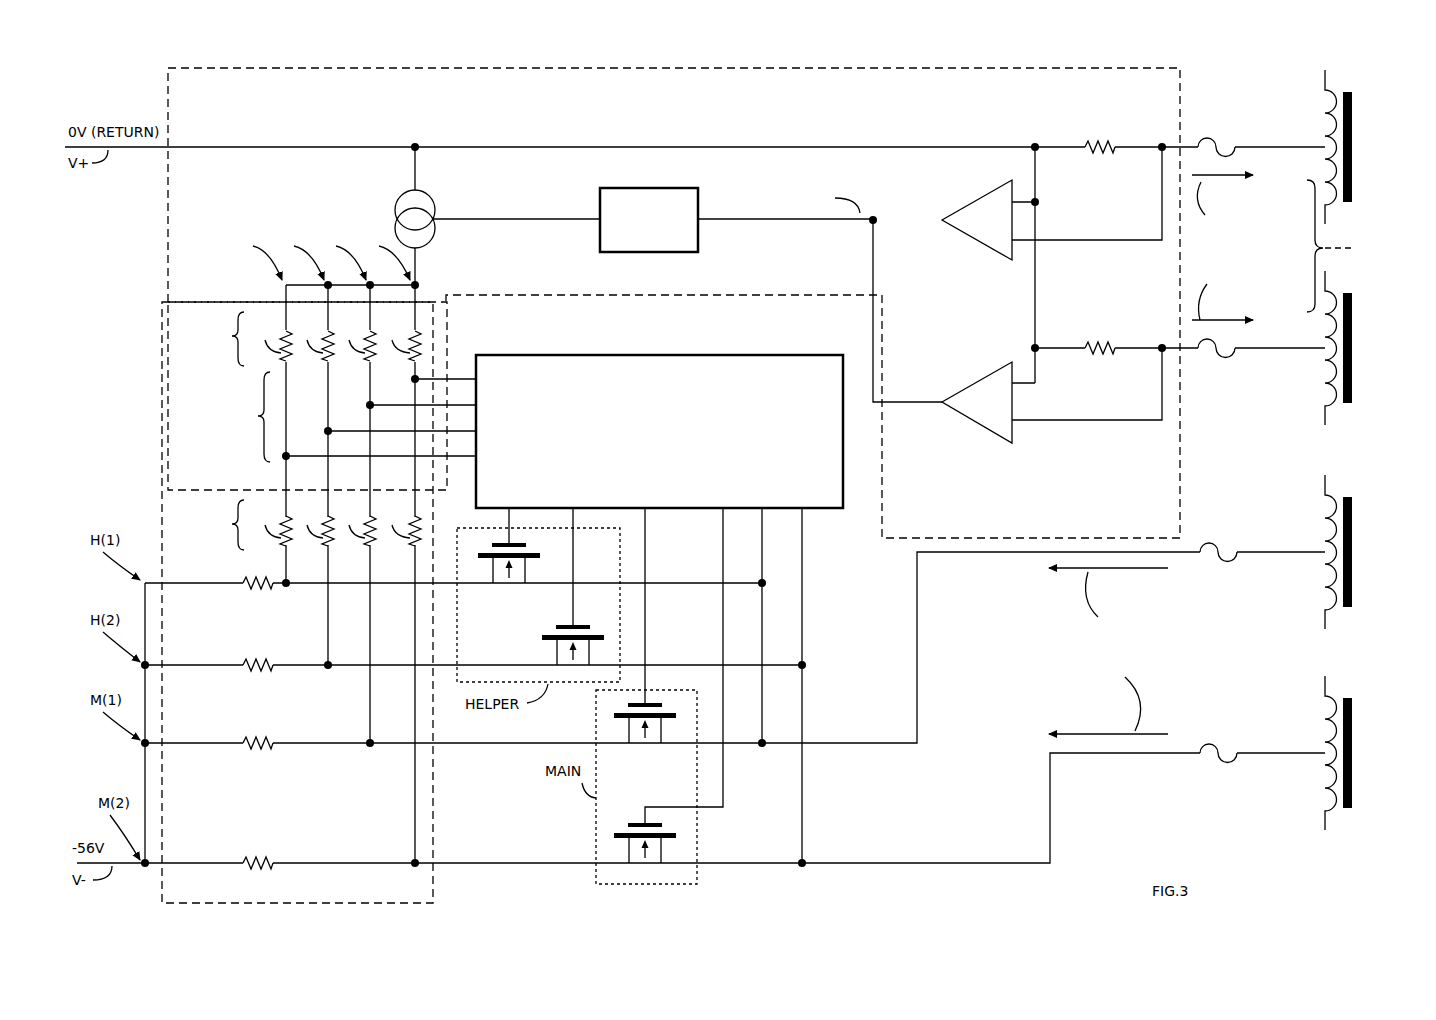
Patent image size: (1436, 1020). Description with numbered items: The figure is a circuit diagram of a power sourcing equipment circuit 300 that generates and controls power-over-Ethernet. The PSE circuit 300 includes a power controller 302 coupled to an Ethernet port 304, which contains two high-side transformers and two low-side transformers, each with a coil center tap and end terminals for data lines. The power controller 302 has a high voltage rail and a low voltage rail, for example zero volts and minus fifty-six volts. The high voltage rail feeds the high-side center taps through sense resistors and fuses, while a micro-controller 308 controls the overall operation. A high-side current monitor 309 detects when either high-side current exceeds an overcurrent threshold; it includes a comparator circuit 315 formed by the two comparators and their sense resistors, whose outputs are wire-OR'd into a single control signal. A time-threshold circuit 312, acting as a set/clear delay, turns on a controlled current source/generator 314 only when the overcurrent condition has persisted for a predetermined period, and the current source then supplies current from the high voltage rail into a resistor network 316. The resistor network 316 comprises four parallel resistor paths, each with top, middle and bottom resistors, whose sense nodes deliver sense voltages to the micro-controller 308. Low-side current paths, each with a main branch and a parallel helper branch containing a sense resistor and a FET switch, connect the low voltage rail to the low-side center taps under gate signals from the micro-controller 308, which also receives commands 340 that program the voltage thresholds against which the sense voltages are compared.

The PSE circuit 300 is at (110, 80).
The power controller 302 is at (435, 58).
The Ethernet port 304 is at (1290, 66).
The micro-controller 308 is at (815, 512).
The high-side current monitor 309 is at (950, 66).
The time-threshold circuit 312 is at (600, 227).
The controlled current source/generator 314 is at (397, 213).
The comparator circuit 315 is at (1165, 116).
The resistor network 316 is at (162, 498).
The commands 340 is at (532, 303).